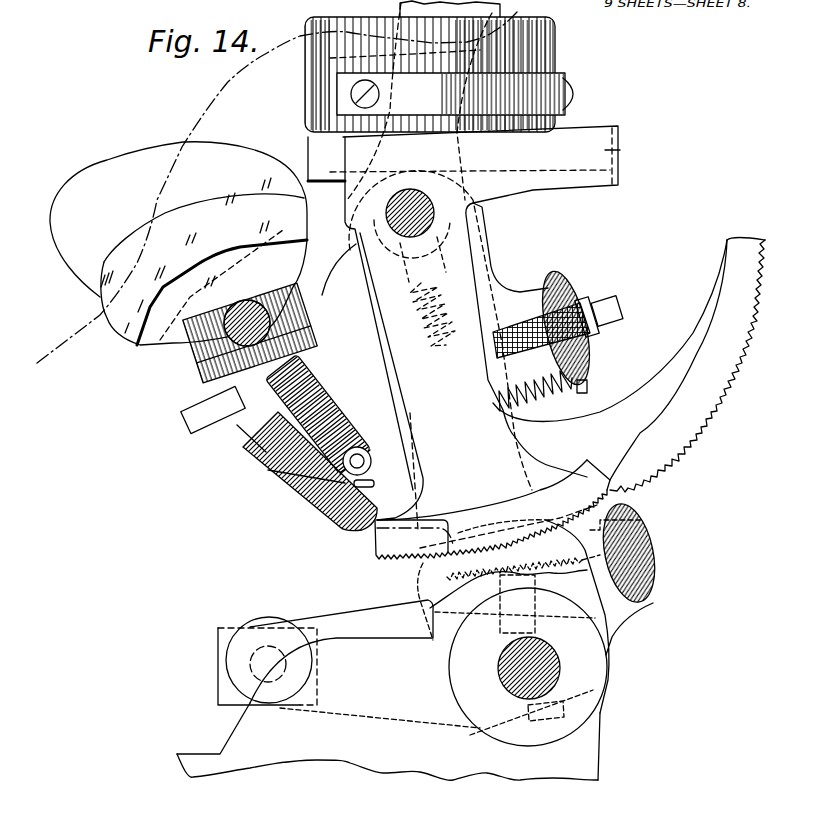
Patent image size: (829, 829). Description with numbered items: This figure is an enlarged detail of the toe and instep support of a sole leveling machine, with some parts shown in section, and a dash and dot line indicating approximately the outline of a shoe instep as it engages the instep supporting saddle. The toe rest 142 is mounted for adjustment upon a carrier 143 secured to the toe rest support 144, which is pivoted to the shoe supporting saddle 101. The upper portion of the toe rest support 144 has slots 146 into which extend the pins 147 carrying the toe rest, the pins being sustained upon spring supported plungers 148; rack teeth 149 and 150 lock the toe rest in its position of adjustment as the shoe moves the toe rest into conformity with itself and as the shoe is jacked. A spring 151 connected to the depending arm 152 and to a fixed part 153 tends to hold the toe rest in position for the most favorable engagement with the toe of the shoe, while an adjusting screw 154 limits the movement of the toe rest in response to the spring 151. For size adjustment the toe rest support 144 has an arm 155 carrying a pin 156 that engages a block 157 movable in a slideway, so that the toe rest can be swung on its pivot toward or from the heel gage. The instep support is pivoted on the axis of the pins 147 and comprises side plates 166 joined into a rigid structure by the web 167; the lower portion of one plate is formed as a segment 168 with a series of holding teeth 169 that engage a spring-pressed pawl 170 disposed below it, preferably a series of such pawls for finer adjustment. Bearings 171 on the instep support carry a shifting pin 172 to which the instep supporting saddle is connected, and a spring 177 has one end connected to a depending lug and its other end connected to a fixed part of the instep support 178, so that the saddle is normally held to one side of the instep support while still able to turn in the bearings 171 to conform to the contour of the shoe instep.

The shoe supporting saddle 101 is at (568, 753).
The toe rest 142 is at (532, 46).
The carrier 143 is at (614, 150).
The toe rest support 144 is at (360, 350).
The slots 146 is at (445, 241).
The pins 147 is at (434, 217).
The spring supported plungers 148 is at (446, 268).
The rack teeth 149 is at (380, 556).
The rack teeth 150 is at (420, 586).
The spring 151 is at (572, 392).
The depending arm 152 is at (423, 397).
The fixed part 153 is at (590, 356).
The adjusting screw 154 is at (590, 300).
The arm 155 is at (358, 620).
The pin 156 is at (262, 660).
The block 157 is at (230, 612).
The side plates 166 is at (240, 430).
The web 167 is at (273, 473).
The segment 168 is at (672, 428).
The holding teeth 169 is at (678, 456).
The spring-pressed pawl 170 is at (608, 630).
The bearings 171 is at (213, 390).
The shifting pin 172 is at (232, 327).
The spring 177 is at (366, 380).
The fixed part of the instep support 178 is at (310, 505).